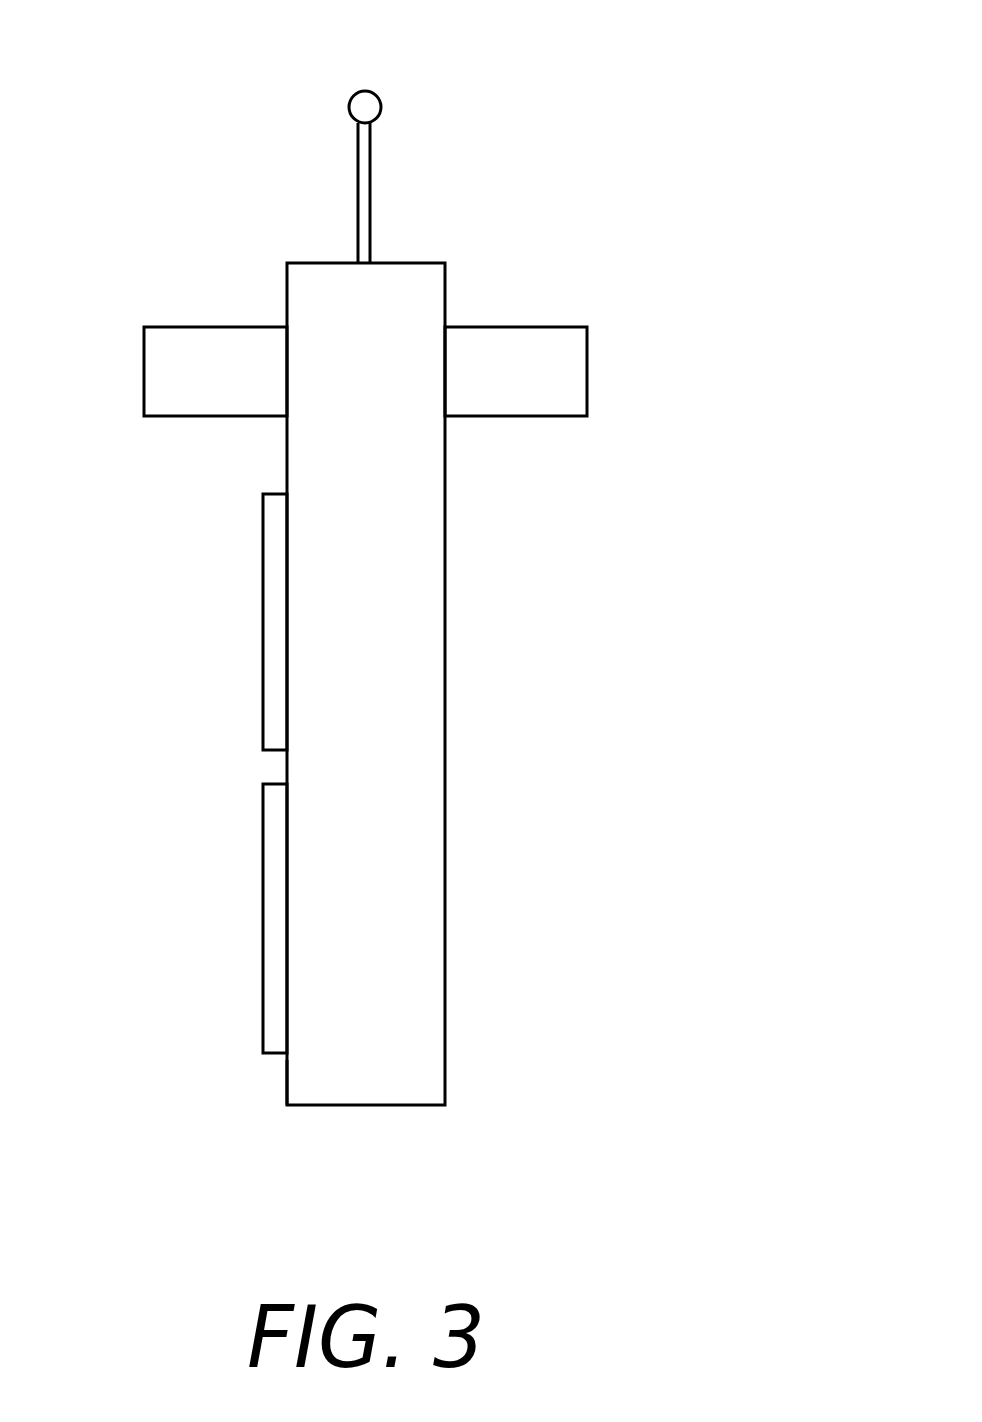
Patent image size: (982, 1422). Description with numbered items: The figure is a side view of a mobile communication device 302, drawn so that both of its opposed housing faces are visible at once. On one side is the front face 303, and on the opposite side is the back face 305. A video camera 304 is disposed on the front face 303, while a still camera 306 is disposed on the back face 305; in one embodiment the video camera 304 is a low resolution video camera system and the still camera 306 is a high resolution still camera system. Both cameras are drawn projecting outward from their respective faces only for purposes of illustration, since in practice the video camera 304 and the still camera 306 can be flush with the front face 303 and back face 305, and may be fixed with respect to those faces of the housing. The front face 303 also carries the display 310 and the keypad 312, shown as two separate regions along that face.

The mobile communication device 302 is at (700, 63).
The front face 303 is at (285, 1082).
The video camera 304 is at (176, 325).
The back face 305 is at (445, 728).
The still camera 306 is at (557, 325).
The display 310 is at (263, 560).
The keypad 312 is at (263, 850).